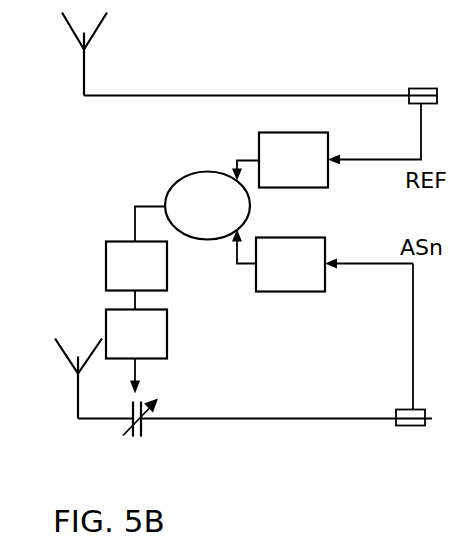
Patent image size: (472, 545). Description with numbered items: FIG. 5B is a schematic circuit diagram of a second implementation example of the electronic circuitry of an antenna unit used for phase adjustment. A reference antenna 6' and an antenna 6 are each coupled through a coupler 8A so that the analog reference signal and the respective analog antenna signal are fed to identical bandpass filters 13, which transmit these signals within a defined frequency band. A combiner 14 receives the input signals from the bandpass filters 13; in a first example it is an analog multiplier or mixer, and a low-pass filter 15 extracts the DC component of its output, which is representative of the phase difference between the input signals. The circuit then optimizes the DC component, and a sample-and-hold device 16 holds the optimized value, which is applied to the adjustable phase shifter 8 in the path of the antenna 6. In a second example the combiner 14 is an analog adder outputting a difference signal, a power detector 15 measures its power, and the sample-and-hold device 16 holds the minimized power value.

The reference antenna 6' is at (70, 54).
The antenna 6 is at (67, 379).
The phase shifter 8 is at (143, 430).
The coupler 8A is at (431, 88).
The bandpass filter 13 is at (307, 171).
The combiner 14 is at (188, 174).
The low-pass filter 15 is at (150, 276).
The sample-and-hold device 16 is at (150, 344).